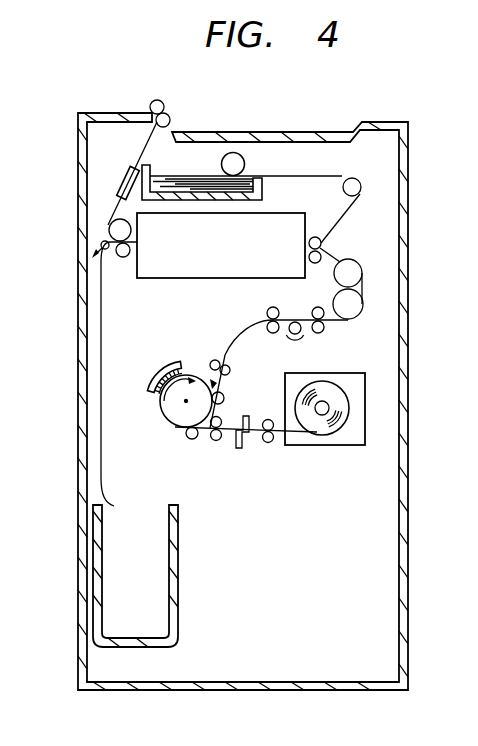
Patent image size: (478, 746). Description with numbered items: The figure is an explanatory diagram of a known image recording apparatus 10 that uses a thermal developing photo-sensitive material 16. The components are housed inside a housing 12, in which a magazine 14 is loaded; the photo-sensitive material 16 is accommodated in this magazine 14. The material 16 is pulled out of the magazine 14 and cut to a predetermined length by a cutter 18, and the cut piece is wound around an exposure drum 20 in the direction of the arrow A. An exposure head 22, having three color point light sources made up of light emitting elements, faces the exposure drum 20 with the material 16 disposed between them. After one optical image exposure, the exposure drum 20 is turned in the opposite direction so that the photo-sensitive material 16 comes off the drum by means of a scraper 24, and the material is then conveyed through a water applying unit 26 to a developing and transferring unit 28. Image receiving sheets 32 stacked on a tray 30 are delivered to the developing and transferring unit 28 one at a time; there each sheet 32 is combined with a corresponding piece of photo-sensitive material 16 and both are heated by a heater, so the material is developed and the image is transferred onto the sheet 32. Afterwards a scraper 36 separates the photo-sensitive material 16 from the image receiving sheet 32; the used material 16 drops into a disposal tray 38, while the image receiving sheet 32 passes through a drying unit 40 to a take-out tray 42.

The electrophotographic printer apparatus 10 is at (342, 120).
The housing 12 is at (407, 478).
The magazine 14 is at (366, 406).
The thermal developing photo-sensitive material 16 is at (318, 433).
The cutter 18 is at (244, 449).
The exposure drum 20 is at (178, 430).
The exposure head 22 is at (149, 376).
The scraper 24 is at (209, 374).
The water applying unit 26 is at (296, 311).
The developing and transferring unit 28 is at (165, 272).
The tray 30 is at (263, 194).
The image receiving sheets 32 is at (183, 178).
The scraper 36 is at (102, 246).
The disposal tray 38 is at (178, 552).
The drying unit 40 is at (118, 184).
The take-out tray 42 is at (252, 132).
The arrow A is at (163, 418).